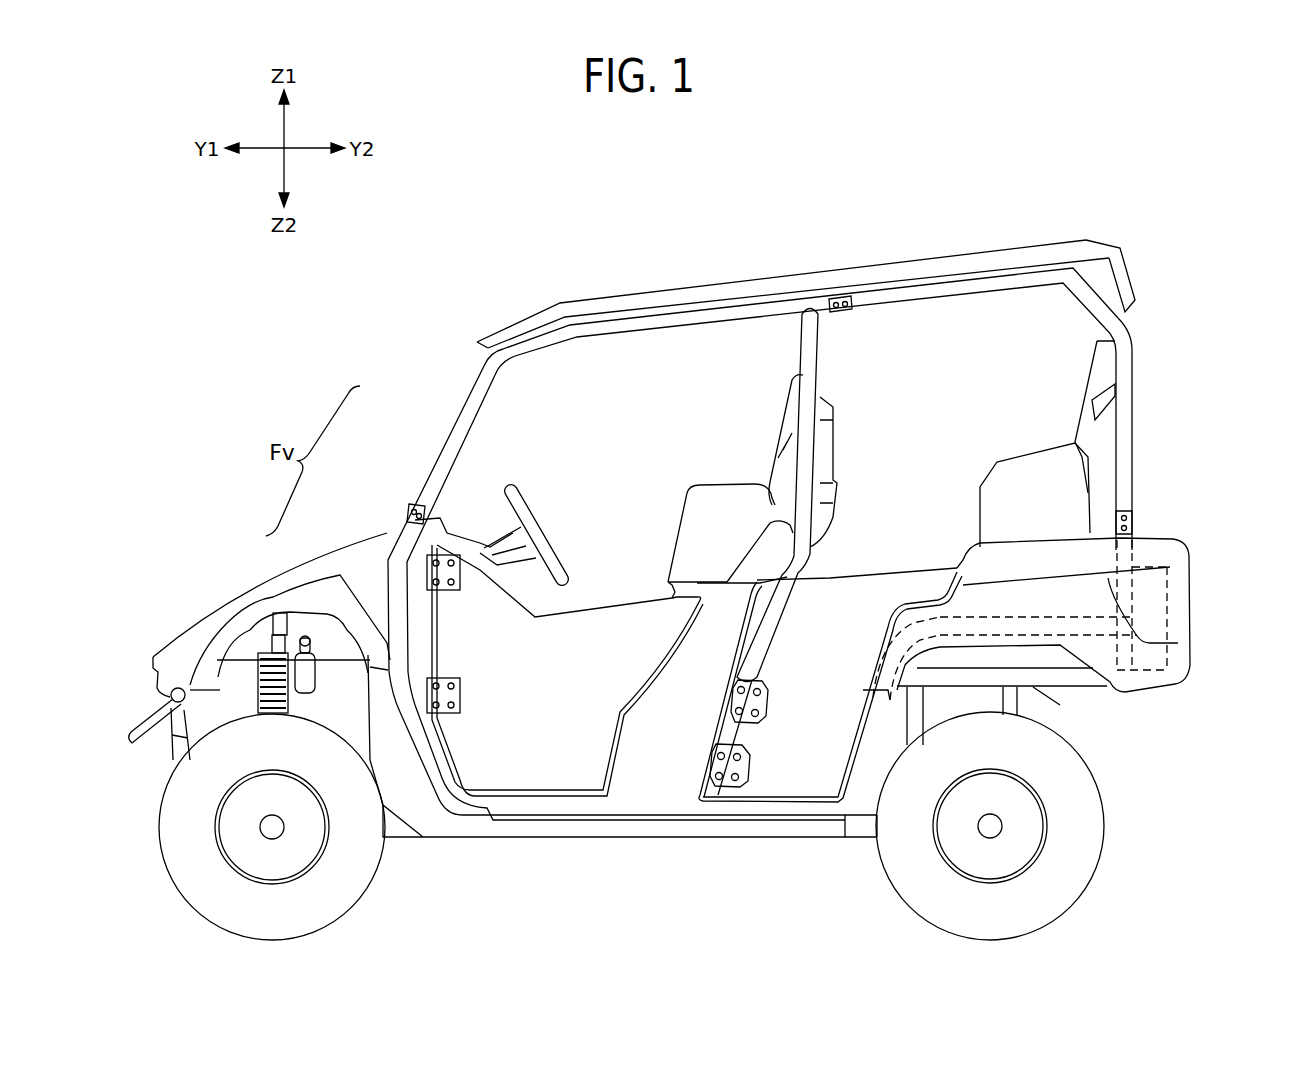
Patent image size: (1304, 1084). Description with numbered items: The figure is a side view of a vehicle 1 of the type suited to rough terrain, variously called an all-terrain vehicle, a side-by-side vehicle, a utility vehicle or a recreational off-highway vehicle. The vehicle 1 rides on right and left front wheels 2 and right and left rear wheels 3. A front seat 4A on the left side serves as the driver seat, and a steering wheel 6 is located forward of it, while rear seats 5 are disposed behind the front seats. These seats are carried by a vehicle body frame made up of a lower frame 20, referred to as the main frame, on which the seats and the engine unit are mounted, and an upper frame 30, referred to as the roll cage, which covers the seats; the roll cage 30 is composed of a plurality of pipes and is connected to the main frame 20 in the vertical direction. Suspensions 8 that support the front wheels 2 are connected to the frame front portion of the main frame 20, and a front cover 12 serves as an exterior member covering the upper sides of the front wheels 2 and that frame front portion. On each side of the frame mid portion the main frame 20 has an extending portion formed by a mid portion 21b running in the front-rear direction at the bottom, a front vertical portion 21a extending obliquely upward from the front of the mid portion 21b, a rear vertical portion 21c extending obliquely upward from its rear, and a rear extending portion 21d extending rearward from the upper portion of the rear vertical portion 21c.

The vehicle 1 is at (1032, 142).
The front wheels 2 is at (158, 862).
The rear wheels 3 is at (1100, 860).
The front seat 4A is at (768, 421).
The rear seats 5 is at (1070, 389).
The steering wheel 6 is at (527, 502).
The suspensions 8 is at (253, 660).
The front cover 12 is at (252, 592).
The lower frame 20 is at (380, 534).
The front vertical portion 21a is at (400, 631).
The mid portion 21b is at (653, 808).
The rear vertical portion 21c is at (863, 750).
The rear extending portion 21d is at (987, 612).
The upper frame 30 is at (445, 425).